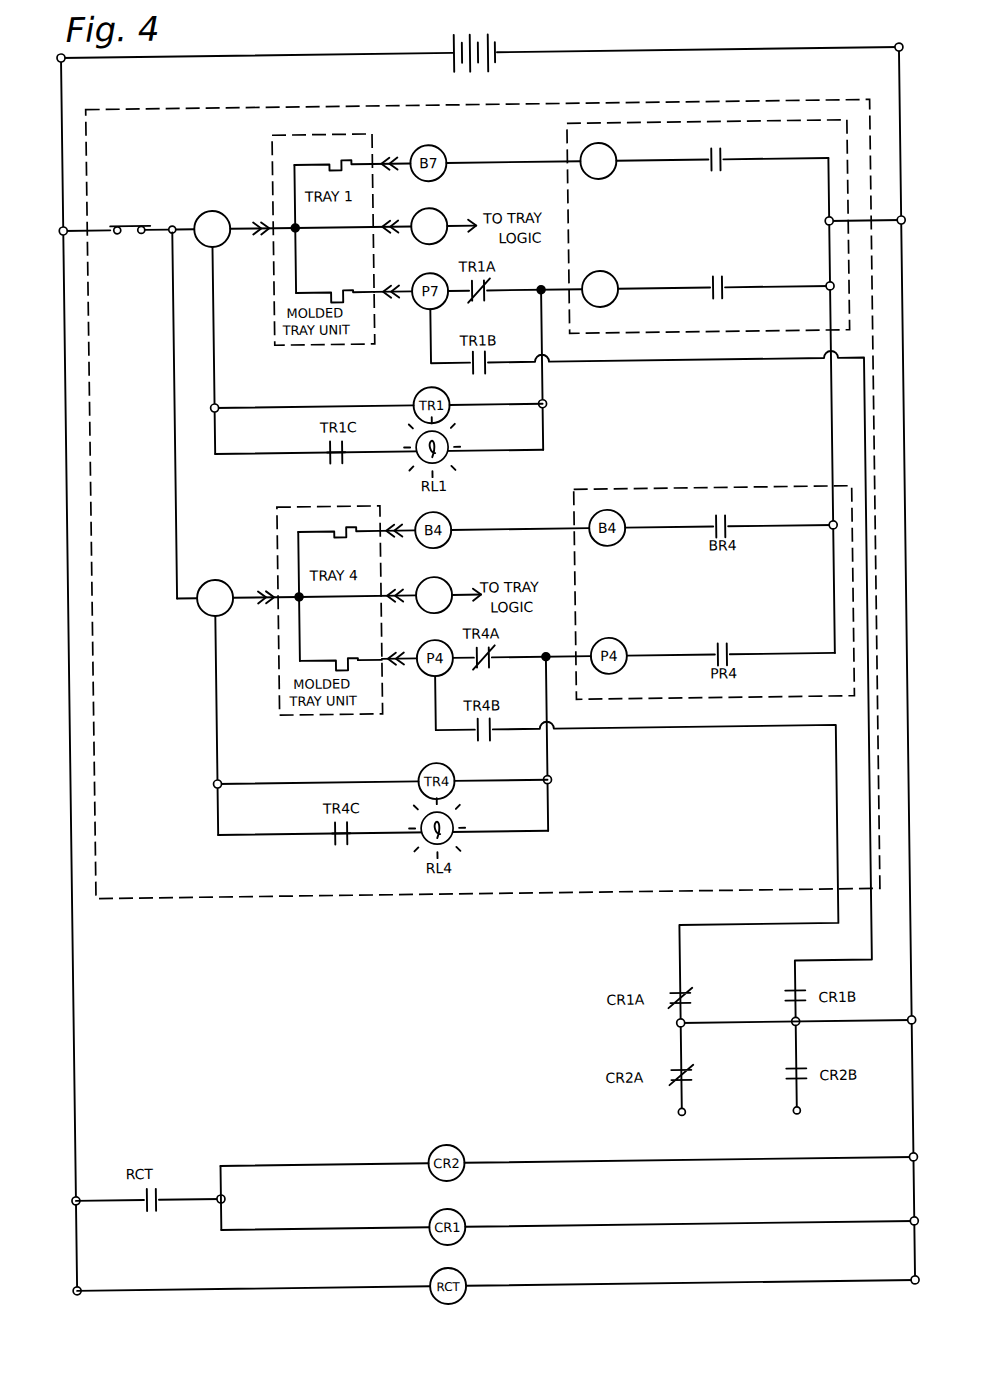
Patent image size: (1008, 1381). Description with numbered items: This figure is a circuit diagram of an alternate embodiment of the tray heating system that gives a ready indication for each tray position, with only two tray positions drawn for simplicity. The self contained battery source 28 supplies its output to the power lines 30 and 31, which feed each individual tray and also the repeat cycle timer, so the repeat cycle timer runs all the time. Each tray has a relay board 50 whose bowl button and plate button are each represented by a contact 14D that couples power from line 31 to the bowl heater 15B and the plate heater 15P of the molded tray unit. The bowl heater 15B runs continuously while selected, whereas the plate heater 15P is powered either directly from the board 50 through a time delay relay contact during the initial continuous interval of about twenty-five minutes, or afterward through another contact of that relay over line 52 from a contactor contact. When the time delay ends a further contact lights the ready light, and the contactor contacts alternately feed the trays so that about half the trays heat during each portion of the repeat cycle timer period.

The self contained battery source 28 is at (495, 70).
The power line 30 is at (60, 571).
The power line 31 is at (899, 598).
The relay board 50 is at (708, 227).
The contact 14D is at (736, 149).
The bowl heater 15B is at (342, 162).
The plate heater 15P is at (350, 289).
The line 52 is at (846, 970).